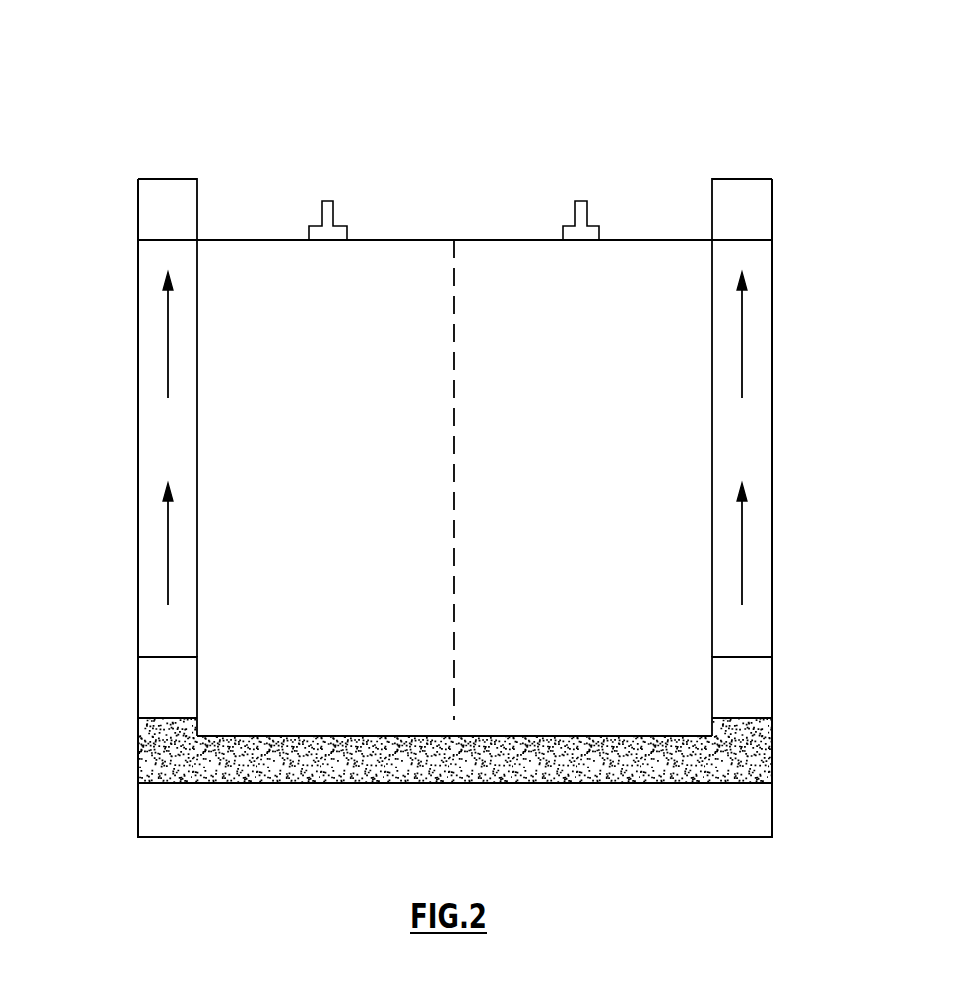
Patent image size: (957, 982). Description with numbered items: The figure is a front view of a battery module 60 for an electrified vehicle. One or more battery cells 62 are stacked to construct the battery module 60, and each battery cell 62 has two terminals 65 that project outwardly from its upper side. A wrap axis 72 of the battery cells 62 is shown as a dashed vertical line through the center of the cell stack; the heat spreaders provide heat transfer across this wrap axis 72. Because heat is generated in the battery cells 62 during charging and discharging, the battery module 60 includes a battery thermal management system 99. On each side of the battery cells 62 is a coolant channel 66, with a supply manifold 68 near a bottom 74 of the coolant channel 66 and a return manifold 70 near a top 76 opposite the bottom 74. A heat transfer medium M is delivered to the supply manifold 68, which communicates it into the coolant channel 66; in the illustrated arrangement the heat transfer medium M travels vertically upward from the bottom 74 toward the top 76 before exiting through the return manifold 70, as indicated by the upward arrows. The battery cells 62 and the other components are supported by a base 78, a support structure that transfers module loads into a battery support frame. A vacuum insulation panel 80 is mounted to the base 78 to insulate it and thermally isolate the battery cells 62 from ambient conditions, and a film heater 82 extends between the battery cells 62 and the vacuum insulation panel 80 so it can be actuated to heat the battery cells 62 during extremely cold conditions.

The battery module 60 is at (392, 83).
The battery cell 62 is at (341, 499).
The terminal 65 is at (352, 197).
The coolant channel 66 is at (459, 448).
The supply manifold 68 is at (162, 681).
The return manifold 70 is at (165, 190).
The wrap axis 72 is at (468, 583).
The bottom 74 is at (804, 704).
The top 76 is at (799, 207).
The base 78 is at (138, 818).
The vacuum insulation panel 80 is at (138, 758).
The film heater 82 is at (609, 727).
The battery thermal management system 99 is at (803, 255).
The heat transfer medium M is at (168, 337).